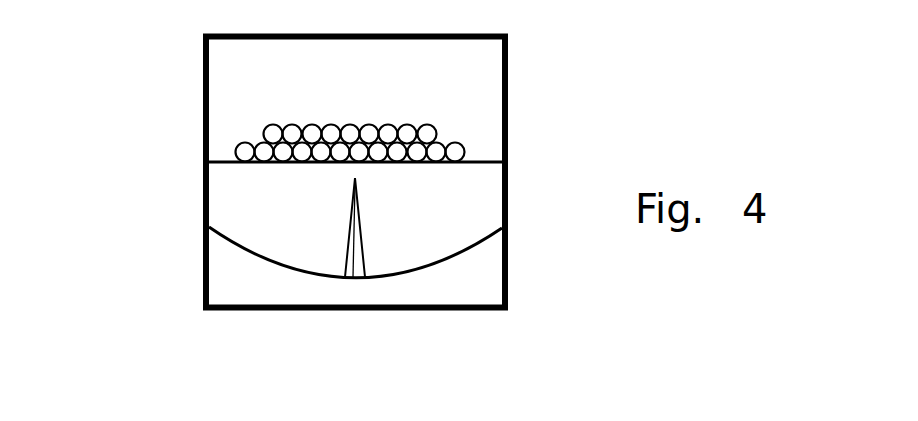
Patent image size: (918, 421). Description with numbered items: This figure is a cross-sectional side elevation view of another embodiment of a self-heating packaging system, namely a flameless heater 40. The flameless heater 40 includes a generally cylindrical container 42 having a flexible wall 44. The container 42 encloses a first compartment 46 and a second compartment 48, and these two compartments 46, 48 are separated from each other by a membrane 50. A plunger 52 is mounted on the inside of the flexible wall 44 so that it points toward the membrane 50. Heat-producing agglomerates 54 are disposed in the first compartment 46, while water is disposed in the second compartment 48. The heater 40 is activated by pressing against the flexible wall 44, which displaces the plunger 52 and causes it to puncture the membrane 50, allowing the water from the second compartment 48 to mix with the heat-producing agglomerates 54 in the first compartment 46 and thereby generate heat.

The flameless heater 40 is at (190, 138).
The container 42 is at (204, 70).
The flexible wall 44 is at (455, 258).
The first compartment 46 is at (298, 87).
The second compartment 48 is at (318, 242).
The membrane 50 is at (279, 164).
The plunger 52 is at (361, 197).
The heat producing agglomerates 54 is at (368, 133).